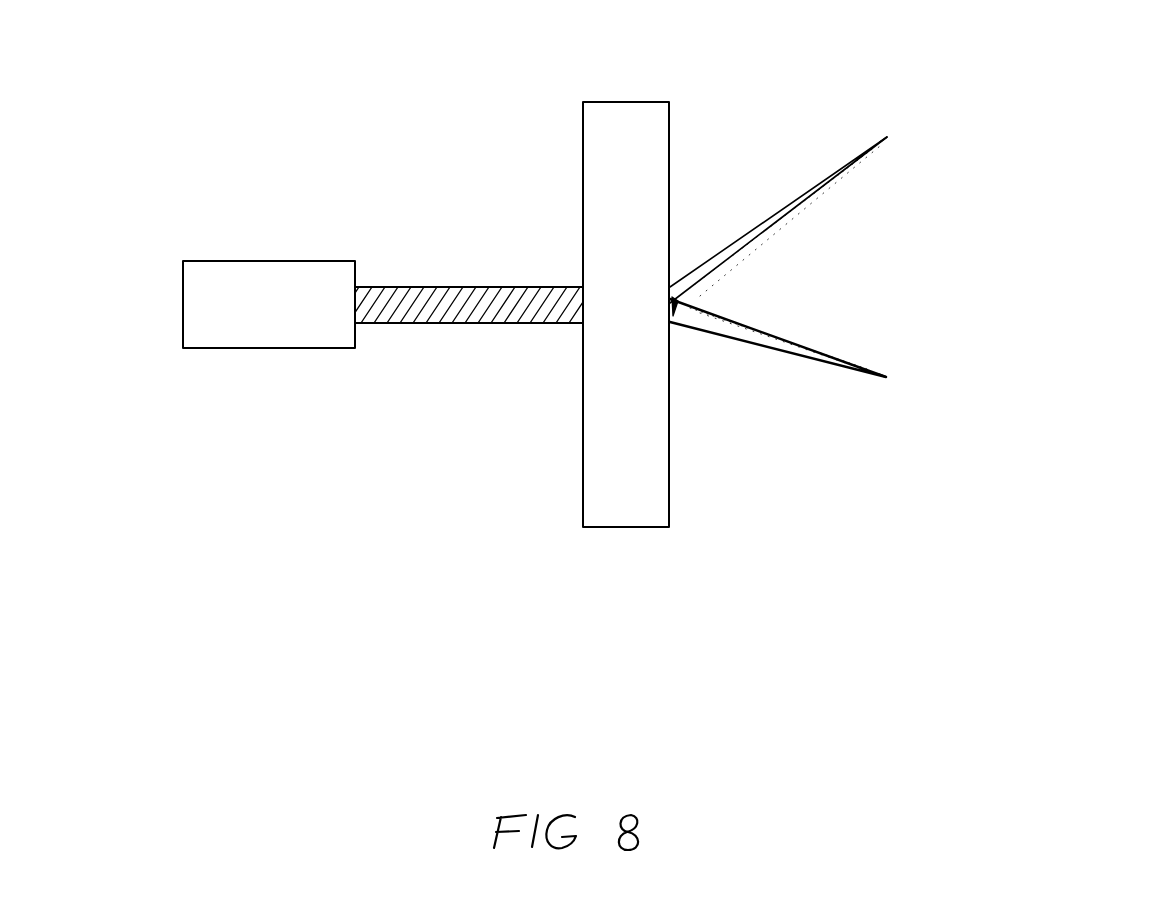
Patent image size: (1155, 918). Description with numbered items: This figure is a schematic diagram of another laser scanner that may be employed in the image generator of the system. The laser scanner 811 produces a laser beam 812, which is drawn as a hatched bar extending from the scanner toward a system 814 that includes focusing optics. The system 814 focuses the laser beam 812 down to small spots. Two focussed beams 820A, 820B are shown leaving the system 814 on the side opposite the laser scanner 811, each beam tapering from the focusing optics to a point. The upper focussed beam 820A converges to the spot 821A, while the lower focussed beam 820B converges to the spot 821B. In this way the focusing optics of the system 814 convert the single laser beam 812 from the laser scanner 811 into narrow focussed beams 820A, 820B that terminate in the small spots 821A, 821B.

The laser scanner 811 is at (269, 304).
The laser beam 812 is at (477, 282).
The system 814 is at (626, 314).
The focussed beam 820A is at (797, 182).
The focussed beam 820B is at (822, 372).
The spot 821A is at (900, 132).
The spot 821B is at (897, 373).